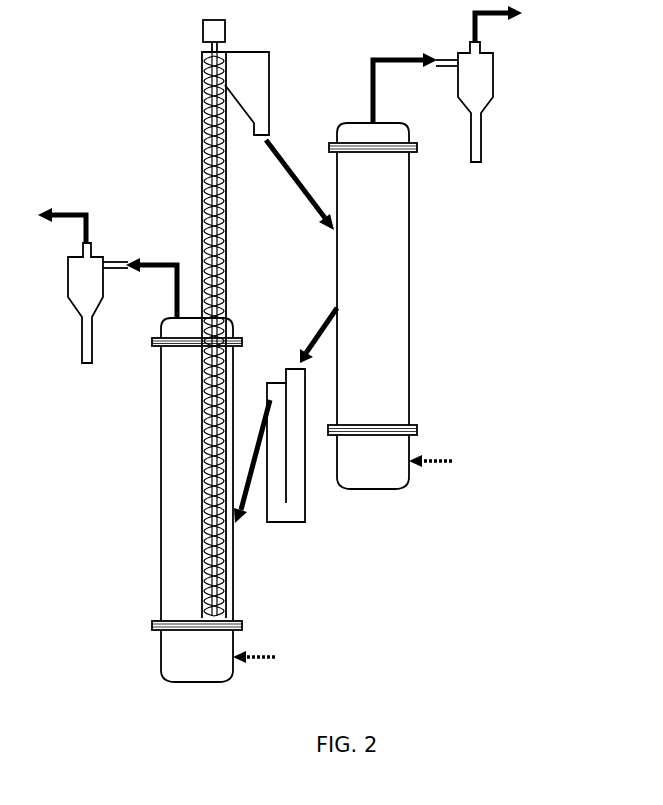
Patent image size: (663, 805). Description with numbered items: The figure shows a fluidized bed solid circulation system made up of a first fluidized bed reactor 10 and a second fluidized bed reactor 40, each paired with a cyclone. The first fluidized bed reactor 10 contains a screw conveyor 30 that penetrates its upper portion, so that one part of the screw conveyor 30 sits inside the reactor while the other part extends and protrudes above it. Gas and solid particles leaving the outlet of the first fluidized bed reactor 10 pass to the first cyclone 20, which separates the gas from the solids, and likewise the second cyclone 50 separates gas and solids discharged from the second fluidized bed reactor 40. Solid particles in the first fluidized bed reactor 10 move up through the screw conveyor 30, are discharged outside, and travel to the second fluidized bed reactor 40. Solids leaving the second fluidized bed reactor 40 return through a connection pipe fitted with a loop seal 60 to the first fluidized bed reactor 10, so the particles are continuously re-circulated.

The first fluidized bed reactor 10 is at (160, 400).
The first cyclone 20 is at (68, 258).
The screw conveyor 30 is at (202, 93).
The second fluidized bed reactor 40 is at (405, 190).
The second cyclone 50 is at (493, 57).
The loop seal 60 is at (305, 515).